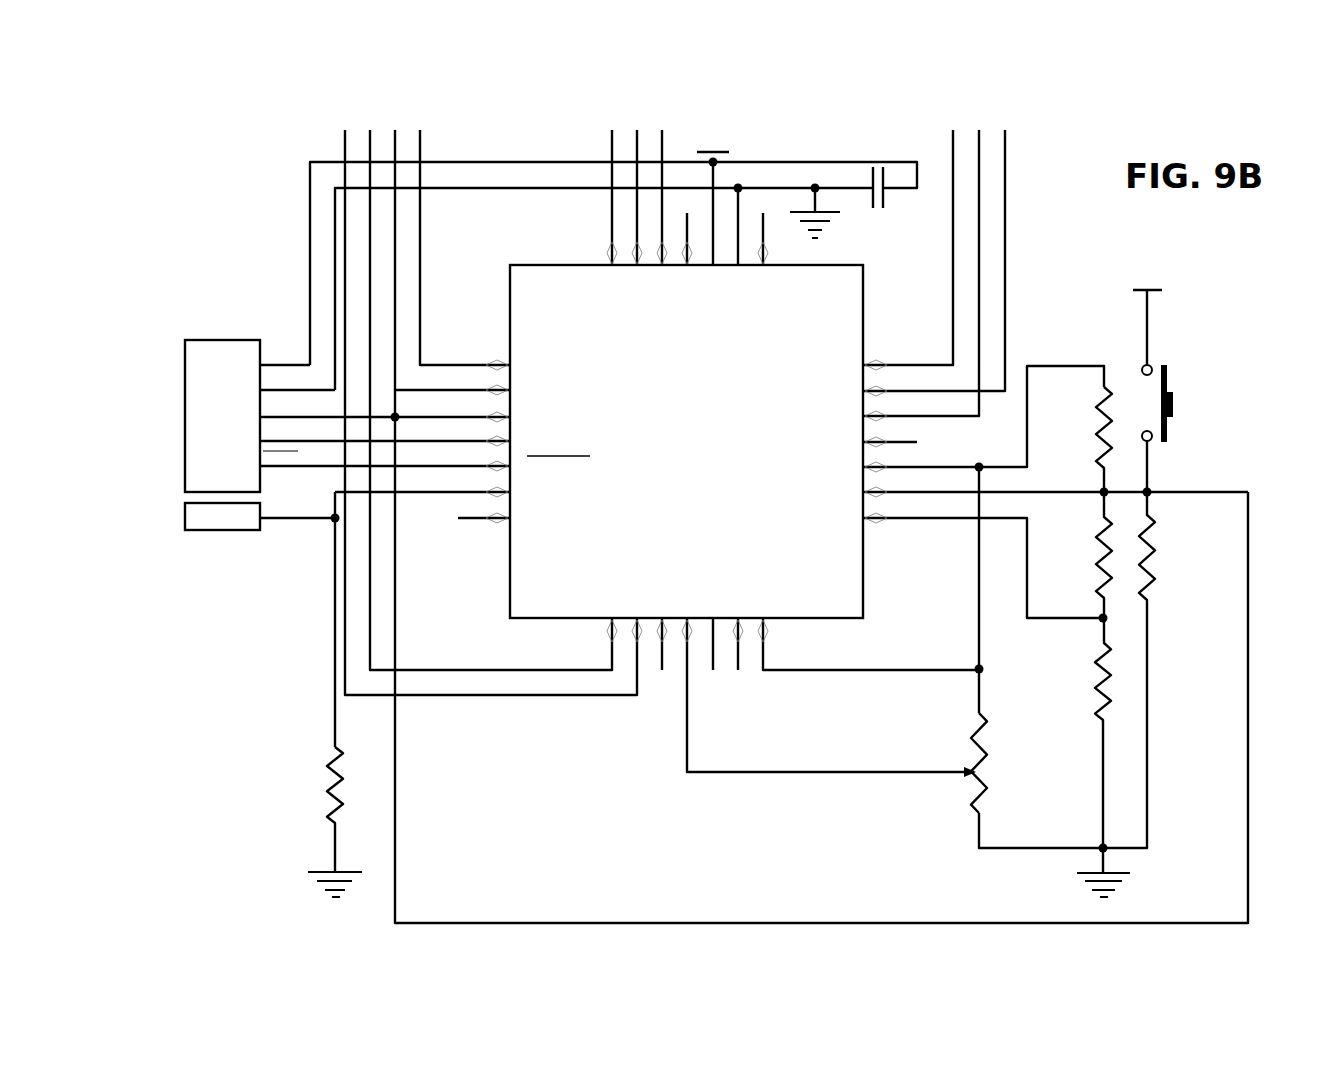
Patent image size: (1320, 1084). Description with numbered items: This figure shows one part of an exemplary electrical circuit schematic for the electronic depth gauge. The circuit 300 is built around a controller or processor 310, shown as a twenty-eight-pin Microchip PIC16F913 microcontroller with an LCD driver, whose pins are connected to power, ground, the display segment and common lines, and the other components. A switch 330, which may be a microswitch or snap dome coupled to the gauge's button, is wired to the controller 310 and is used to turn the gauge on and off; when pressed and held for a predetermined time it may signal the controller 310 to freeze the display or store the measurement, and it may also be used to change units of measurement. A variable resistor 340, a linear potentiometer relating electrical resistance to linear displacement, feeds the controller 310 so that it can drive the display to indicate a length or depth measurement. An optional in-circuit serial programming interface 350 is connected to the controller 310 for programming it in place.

The circuit 300 is at (228, 161).
The controller or processor 310 is at (703, 423).
The switch 330 is at (1167, 362).
The variable resistor 340 is at (988, 752).
The in-circuit serial programming (ICSP) interface 350 is at (200, 365).